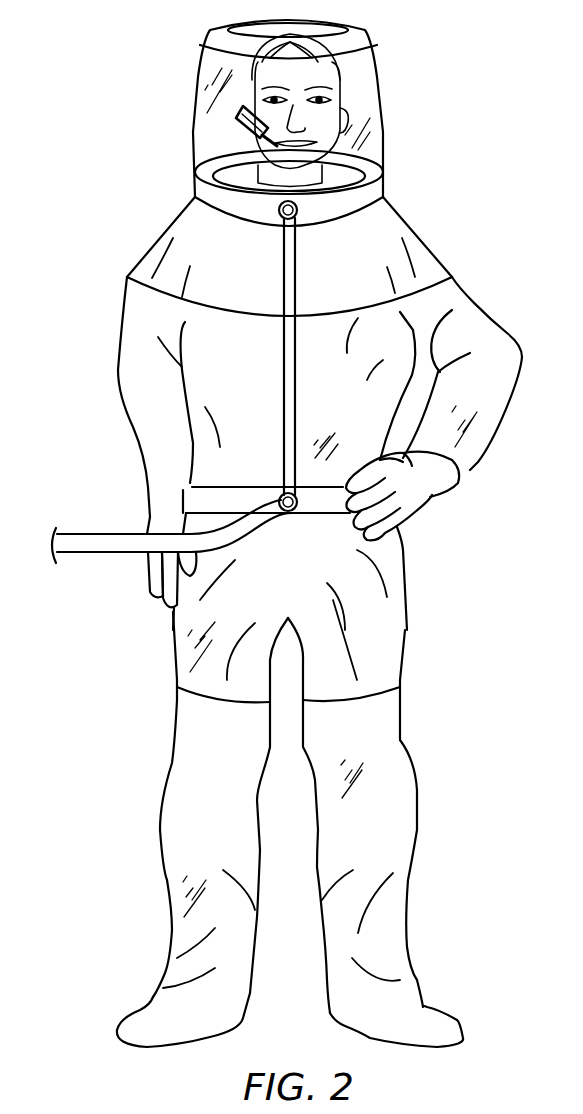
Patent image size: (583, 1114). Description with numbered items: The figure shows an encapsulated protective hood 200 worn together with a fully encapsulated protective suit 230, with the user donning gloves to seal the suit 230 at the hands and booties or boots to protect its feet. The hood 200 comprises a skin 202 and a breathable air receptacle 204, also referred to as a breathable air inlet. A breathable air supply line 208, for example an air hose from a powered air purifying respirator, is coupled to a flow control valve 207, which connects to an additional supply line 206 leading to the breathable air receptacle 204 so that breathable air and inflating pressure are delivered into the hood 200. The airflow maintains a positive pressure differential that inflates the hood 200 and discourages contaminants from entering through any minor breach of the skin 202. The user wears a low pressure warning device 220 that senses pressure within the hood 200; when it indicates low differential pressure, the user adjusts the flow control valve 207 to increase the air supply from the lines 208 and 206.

The encapsulated protective hood 200 is at (143, 63).
The skin 202 is at (373, 126).
The breathable air receptacle 204 is at (297, 212).
The additional supply line 206 is at (282, 280).
The flow control valve 207 is at (277, 496).
The breathable air supply line 208 is at (108, 556).
The low pressure warning device 220 is at (238, 116).
The protective suit 230 is at (486, 458).